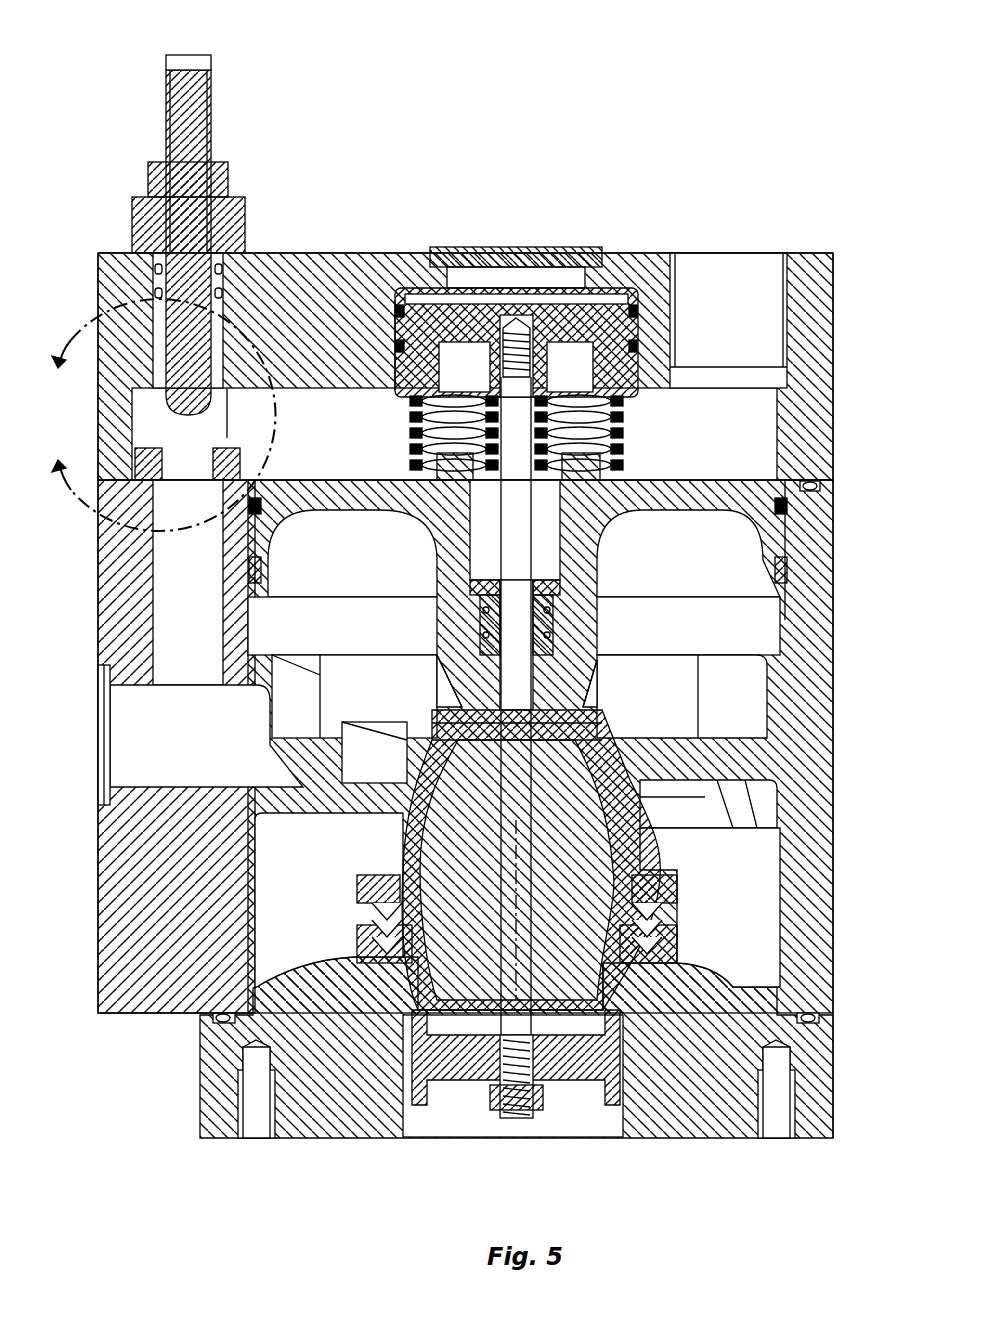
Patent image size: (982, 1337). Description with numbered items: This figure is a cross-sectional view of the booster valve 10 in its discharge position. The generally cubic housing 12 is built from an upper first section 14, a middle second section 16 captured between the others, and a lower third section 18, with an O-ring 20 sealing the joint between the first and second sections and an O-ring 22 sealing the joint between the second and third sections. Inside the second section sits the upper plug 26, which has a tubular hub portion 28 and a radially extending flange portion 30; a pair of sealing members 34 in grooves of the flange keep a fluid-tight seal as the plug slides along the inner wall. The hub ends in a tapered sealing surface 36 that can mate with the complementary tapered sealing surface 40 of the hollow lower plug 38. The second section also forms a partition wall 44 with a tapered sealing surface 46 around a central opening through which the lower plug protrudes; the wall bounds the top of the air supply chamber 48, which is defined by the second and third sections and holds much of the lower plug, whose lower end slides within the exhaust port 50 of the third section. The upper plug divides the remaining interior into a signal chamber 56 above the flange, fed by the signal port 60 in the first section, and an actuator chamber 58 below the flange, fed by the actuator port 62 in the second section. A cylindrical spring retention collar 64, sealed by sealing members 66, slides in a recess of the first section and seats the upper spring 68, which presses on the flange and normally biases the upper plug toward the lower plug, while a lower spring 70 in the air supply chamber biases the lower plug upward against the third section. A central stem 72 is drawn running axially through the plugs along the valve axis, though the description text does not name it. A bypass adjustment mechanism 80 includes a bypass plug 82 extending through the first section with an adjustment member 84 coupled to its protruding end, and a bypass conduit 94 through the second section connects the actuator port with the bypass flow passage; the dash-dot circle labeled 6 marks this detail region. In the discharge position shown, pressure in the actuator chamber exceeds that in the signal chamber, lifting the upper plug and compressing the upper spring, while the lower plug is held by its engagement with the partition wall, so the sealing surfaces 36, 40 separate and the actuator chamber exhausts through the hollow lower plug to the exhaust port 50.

The detail view circle for FIG. 6 is at (164, 415).
The booster valve 10 is at (771, 155).
The housing 12 is at (641, 233).
The first section 14 is at (812, 393).
The second section 16 is at (812, 758).
The third section 18 is at (812, 1086).
The O-ring 20 is at (800, 488).
The O-ring 22 is at (815, 1019).
The upper plug 26 is at (405, 588).
The hub portion 28 is at (583, 577).
The flange portion 30 is at (287, 557).
The sealing members 34 is at (787, 505).
The tapered sealing surface 36 is at (450, 683).
The lower plug 38 is at (665, 857).
The tapered sealing surface 40 is at (700, 690).
The partition wall 44 is at (705, 745).
The tapered sealing surface 46 is at (645, 800).
The air supply chamber 48 is at (292, 898).
The exhaust port 50 is at (452, 1093).
The signal chamber 56 is at (717, 460).
The actuator chamber 58 is at (727, 545).
The signal port 60 is at (722, 262).
The actuator port 62 is at (130, 733).
The spring retention collar 64 is at (468, 340).
The sealing members 66 is at (398, 335).
The upper spring 68 is at (410, 442).
The lower spring 70 is at (652, 950).
The valve stem 72 is at (524, 405).
The bypass adjustment mechanism 80 is at (241, 72).
The bypass plug 82 is at (182, 221).
The adjustment member 84 is at (148, 164).
The bypass conduit 94 is at (170, 549).